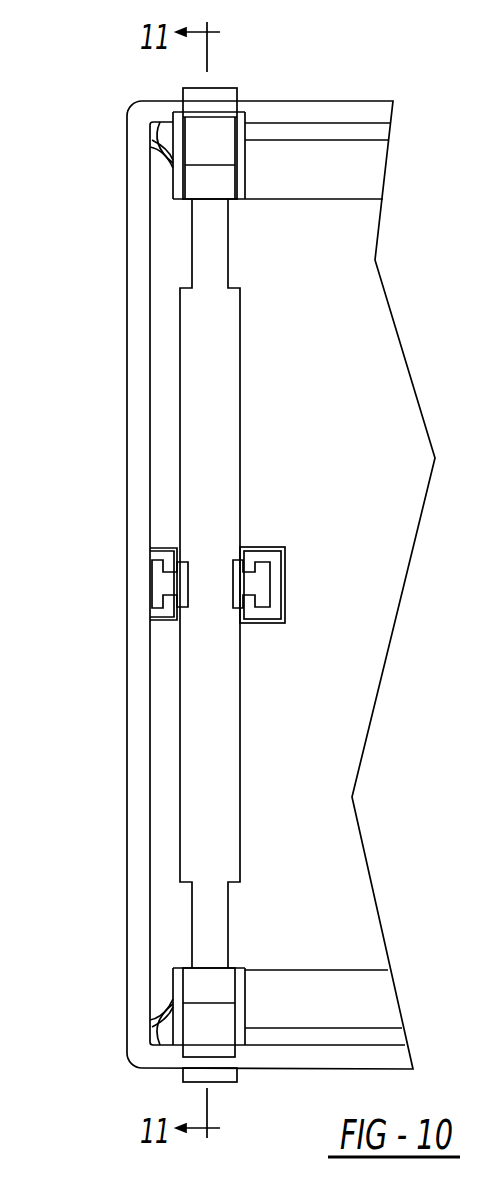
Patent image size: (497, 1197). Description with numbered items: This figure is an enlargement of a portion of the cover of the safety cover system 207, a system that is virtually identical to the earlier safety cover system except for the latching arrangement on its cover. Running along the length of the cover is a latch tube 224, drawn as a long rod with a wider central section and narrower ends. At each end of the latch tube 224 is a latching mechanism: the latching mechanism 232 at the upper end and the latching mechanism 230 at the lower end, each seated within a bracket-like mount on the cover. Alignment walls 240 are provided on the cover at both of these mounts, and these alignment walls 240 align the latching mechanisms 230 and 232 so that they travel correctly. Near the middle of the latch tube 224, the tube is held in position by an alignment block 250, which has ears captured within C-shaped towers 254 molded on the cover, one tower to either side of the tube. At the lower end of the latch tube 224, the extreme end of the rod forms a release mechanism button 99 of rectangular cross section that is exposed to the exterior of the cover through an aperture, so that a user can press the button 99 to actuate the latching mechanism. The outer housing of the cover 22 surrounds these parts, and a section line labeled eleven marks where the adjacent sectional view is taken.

The housing 22 is at (308, 585).
The release mechanism button 99 is at (220, 1082).
The safety cover system 207 is at (236, 84).
The latch tube 224 is at (242, 408).
The latching mechanism 230 is at (200, 1017).
The latching mechanism 232 is at (215, 147).
The alignment wall 240 is at (173, 175).
The alignment block 250 is at (238, 567).
The C-shaped tower 254 is at (160, 553).